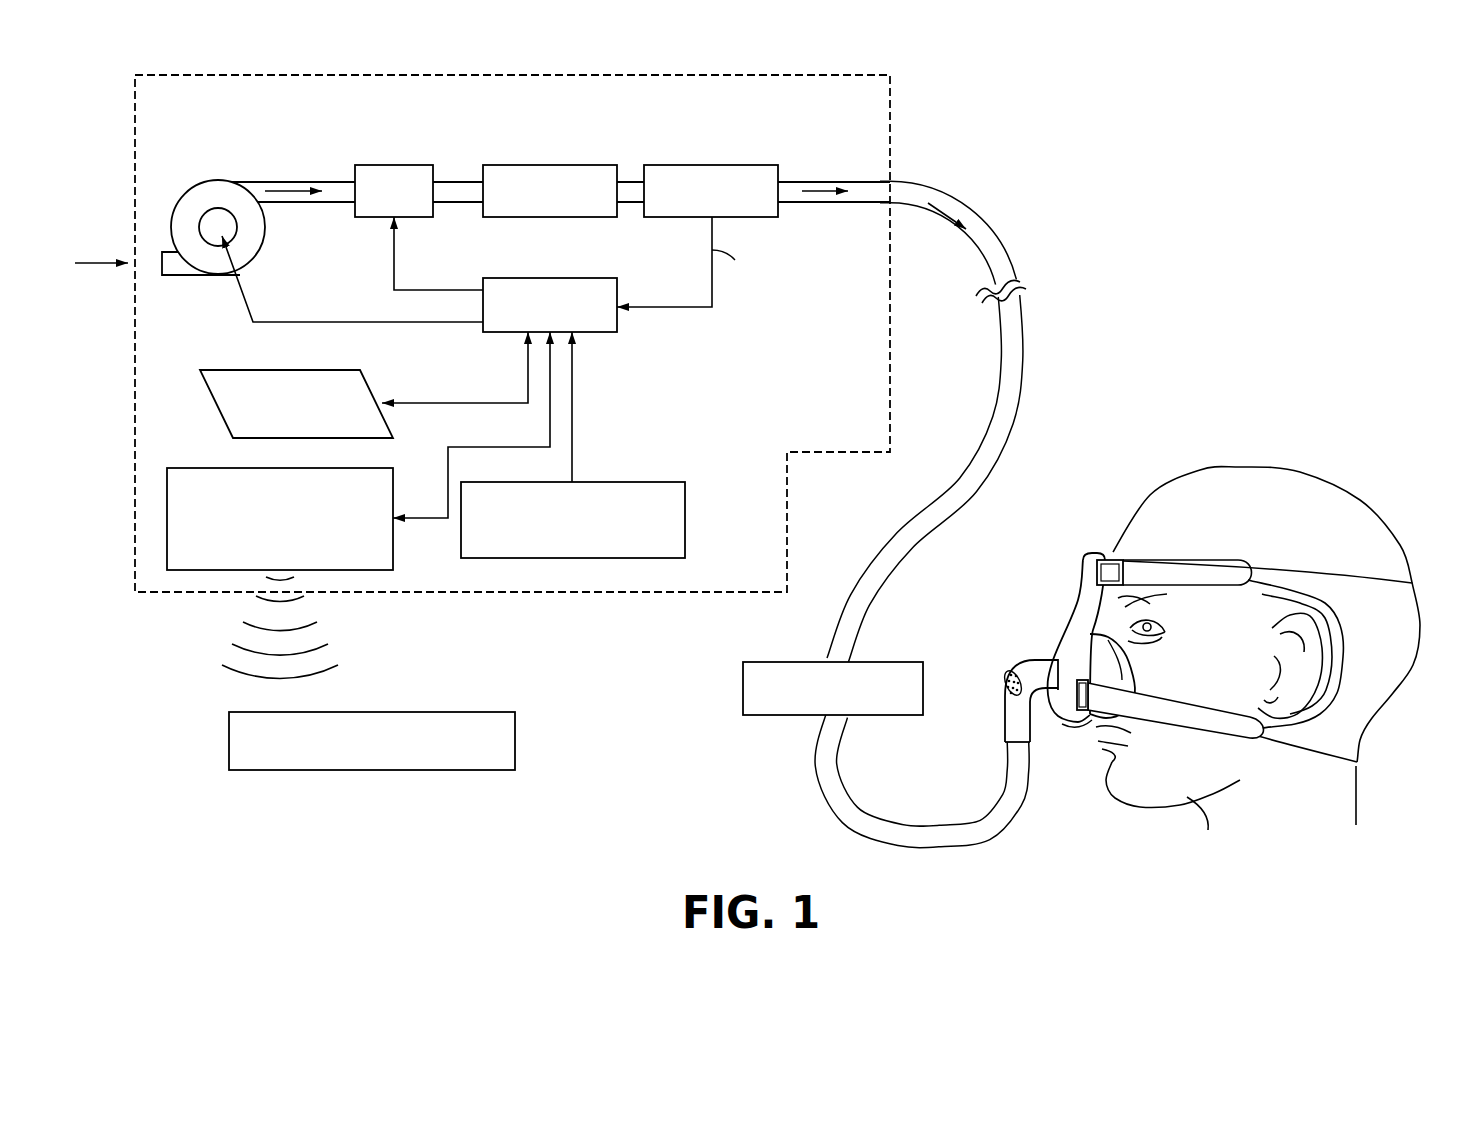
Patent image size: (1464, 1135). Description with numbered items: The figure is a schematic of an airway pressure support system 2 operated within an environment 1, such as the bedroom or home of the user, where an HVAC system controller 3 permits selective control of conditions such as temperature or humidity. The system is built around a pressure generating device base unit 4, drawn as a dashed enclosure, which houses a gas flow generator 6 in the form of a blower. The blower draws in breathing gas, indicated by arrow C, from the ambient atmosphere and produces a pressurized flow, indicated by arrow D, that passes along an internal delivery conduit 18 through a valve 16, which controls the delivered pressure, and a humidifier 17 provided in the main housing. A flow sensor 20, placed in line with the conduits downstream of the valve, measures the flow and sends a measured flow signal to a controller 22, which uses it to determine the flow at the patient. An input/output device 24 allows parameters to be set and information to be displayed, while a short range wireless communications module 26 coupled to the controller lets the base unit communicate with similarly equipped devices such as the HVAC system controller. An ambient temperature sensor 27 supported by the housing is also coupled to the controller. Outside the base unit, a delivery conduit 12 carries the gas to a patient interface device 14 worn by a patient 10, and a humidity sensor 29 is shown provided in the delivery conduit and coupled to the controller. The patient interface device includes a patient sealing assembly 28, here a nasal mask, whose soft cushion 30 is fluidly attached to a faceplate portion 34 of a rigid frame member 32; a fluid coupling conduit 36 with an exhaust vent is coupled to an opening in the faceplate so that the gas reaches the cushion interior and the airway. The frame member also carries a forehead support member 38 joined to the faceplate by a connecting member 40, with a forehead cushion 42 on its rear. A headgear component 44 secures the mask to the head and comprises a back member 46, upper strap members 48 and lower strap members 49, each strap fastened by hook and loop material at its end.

The environment 1 is at (238, 893).
The airway pressure support system 2 is at (1192, 211).
The HVAC system controller 3 is at (350, 771).
The pressure generating device base unit 4 is at (668, 593).
The gas flow generator 6 is at (210, 182).
The patient 10 is at (1236, 463).
The delivery conduit 12 is at (988, 238).
The patient interface device 14 is at (1052, 535).
The valve 16 is at (393, 165).
The humidifier 17 is at (546, 165).
The internal delivery conduit 18 is at (829, 182).
The flow sensor 20 is at (703, 165).
The controller 22 is at (617, 325).
The input/output device 24 is at (228, 370).
The short range wireless communications module 26 is at (195, 571).
The ambient temperature sensor 27 is at (685, 510).
The patient sealing assembly 28 is at (1082, 735).
The humidity sensor 29 is at (743, 685).
The cushion 30 is at (1122, 682).
The frame member 32 is at (1068, 622).
The faceplate portion 34 is at (1066, 706).
The fluid coupling conduit 36 is at (1004, 718).
The forehead support member 38 is at (1090, 552).
The connecting member 40 is at (1076, 600).
The forehead cushion 42 is at (1120, 548).
The headgear component 44 is at (1282, 752).
The back member 46 is at (1386, 690).
The upper strap members 48 is at (1335, 573).
The lower strap members 49 is at (1318, 743).
The breathing gas (arrow C) C is at (89, 262).
The pressurized flow of breathing gas (arrow D) D is at (288, 182).